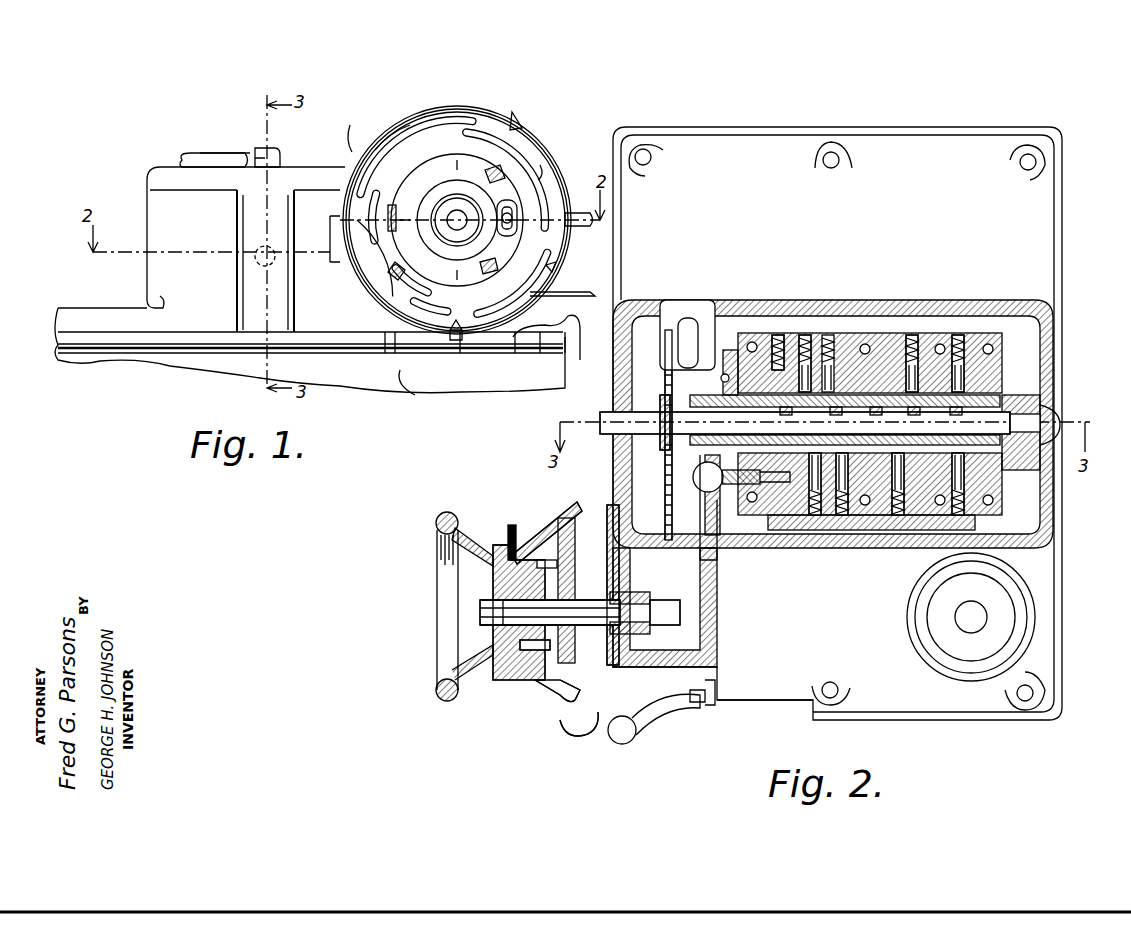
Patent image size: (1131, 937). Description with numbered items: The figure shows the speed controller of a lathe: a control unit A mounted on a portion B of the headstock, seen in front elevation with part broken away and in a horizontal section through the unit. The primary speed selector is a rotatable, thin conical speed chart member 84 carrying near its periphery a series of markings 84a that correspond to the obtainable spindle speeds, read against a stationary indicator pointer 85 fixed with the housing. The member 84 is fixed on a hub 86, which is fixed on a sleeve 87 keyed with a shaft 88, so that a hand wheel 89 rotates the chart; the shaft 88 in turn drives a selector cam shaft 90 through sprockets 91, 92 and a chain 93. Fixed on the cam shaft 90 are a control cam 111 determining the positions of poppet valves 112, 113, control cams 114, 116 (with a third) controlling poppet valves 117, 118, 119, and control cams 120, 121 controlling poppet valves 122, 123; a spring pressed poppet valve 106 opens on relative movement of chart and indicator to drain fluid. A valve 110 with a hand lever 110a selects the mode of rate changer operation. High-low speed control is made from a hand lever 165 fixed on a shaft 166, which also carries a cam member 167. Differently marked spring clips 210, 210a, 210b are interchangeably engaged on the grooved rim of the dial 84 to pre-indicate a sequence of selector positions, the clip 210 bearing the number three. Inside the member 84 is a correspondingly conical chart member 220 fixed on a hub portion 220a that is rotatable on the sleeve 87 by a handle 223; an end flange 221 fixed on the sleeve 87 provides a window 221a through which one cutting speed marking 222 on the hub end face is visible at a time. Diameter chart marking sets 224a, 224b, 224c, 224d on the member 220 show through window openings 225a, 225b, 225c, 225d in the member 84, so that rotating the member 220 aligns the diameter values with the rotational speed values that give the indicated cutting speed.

In FIG. 1, the valve 110 is at (252, 150).
In FIG. 1, the hand lever 110a is at (198, 158).
In FIG. 1, the control unit A is at (352, 130).
In FIG. 1, the headstock portion B is at (415, 393).
In FIG. 1, the window opening 225c is at (445, 120).
In FIG. 1, the diameter chart markings 224c is at (388, 138).
In FIG. 1, the diameter chart markings 224d is at (495, 165).
In FIG. 1, the window opening 225d is at (522, 138).
In FIG. 1, the spring clip 210b is at (520, 112).
In FIG. 1, the speed chart markings 84a is at (542, 168).
In FIG. 1, the speed chart member 84 is at (562, 182).
In FIG. 2, the speed chart member 84 is at (545, 520).
In FIG. 1, the indicator pointer 85 is at (578, 224).
In FIG. 2, the indicator pointer 85 is at (570, 738).
In FIG. 1, the window 221a is at (504, 210).
In FIG. 2, the window 221a is at (492, 660).
In FIG. 1, the cutting speed marking 222 is at (502, 234).
In FIG. 1, the selector cam shaft 90 is at (258, 268).
In FIG. 2, the selector cam shaft 90 is at (640, 441).
In FIG. 1, the window opening 225b is at (372, 240).
In FIG. 1, the diameter chart markings 224b is at (392, 272).
In FIG. 1, the window opening 225a is at (430, 310).
In FIG. 1, the diameter chart markings 224a is at (490, 275).
In FIG. 1, the spring clip 210a is at (457, 342).
In FIG. 1, the spring clip 210 is at (560, 268).
In FIG. 2, the spring clip 210 is at (548, 705).
In FIG. 1, the hand lever 165 is at (570, 298).
In FIG. 2, the hand lever 165 is at (628, 740).
In FIG. 2, the poppet valve 117 is at (783, 340).
In FIG. 2, the poppet valve 118 is at (805, 335).
In FIG. 2, the poppet valve 123 is at (912, 370).
In FIG. 2, the poppet valve 112 is at (960, 370).
In FIG. 2, the cam member 167 is at (678, 368).
In FIG. 2, the sprocket 91 is at (660, 445).
In FIG. 2, the control cam 114 is at (787, 418).
In FIG. 2, the control cam 116 is at (840, 418).
In FIG. 2, the control cam 120 is at (880, 418).
In FIG. 2, the control cam 121 is at (917, 418).
In FIG. 2, the control cam 111 is at (957, 418).
In FIG. 2, the poppet valve 106 is at (815, 500).
In FIG. 2, the poppet valve 119 is at (842, 500).
In FIG. 2, the poppet valve 122 is at (898, 500).
In FIG. 2, the poppet valve 113 is at (958, 500).
In FIG. 2, the chain 93 is at (654, 451).
In FIG. 2, the sprocket 92 is at (658, 627).
In FIG. 2, the shaft 88 is at (600, 612).
In FIG. 2, the hub 86 is at (608, 512).
In FIG. 2, the handle 223 is at (497, 510).
In FIG. 2, the conical chart member 220 is at (510, 560).
In FIG. 2, the hub portion 220a is at (500, 572).
In FIG. 2, the hand wheel 89 is at (436, 686).
In FIG. 2, the end flange 221 is at (500, 682).
In FIG. 2, the sleeve 87 is at (515, 680).
In FIG. 2, the shaft 166 is at (702, 705).